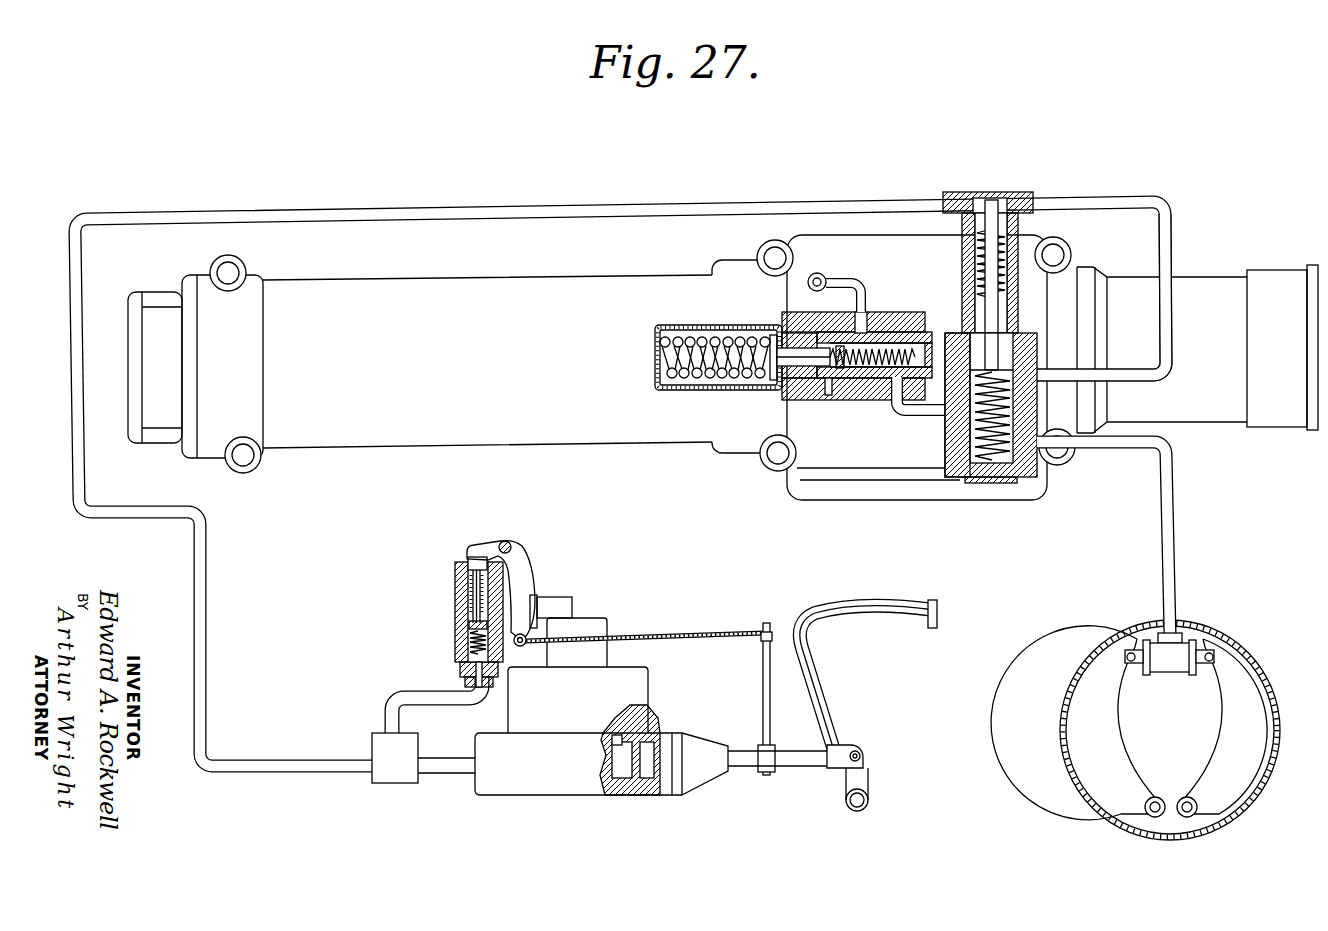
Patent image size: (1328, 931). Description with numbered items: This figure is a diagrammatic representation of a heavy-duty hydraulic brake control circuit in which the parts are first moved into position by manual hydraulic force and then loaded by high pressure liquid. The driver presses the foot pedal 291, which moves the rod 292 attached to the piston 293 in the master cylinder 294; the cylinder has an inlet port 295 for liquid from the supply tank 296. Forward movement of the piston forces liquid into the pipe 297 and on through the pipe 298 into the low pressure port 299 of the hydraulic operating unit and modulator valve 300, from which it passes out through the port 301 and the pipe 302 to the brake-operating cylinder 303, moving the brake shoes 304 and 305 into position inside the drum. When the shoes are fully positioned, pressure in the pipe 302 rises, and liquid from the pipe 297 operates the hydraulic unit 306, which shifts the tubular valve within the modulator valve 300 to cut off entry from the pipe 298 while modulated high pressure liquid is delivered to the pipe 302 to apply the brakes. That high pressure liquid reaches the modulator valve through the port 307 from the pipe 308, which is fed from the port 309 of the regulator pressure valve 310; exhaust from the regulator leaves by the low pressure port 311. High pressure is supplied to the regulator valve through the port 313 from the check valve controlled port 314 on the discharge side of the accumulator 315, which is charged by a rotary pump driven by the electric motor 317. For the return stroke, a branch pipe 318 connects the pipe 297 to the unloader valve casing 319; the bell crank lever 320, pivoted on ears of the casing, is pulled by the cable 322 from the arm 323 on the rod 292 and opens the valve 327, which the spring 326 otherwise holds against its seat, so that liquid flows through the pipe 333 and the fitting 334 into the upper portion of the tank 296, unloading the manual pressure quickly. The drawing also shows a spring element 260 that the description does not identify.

The spring 260 is at (690, 394).
The foot pedal 291 is at (881, 615).
The rod 292 is at (797, 769).
The piston 293 is at (643, 796).
The master cylinder 294 is at (543, 780).
The inlet port 295 is at (618, 733).
The supply tank 296 is at (634, 686).
The pipe 297 is at (500, 212).
The pipe 298 is at (1173, 238).
The low pressure port 299 is at (1028, 372).
The hydraulic operating unit and modulator valve 300 is at (947, 451).
The port 301 is at (1038, 474).
The pipe 302 is at (1170, 498).
The brake-operating cylinder 303 is at (1172, 660).
The brake shoe 304 is at (1092, 706).
The brake shoe 305 is at (1237, 680).
The hydraulic unit 306 is at (962, 258).
The port 307 is at (957, 408).
The pipe 308 is at (913, 416).
The port 309 is at (856, 400).
The regulator pressure valve 310 is at (850, 412).
The low pressure port 311 is at (828, 400).
The port 313 is at (862, 316).
The check valve controlled port 314 is at (840, 283).
The accumulator 315 is at (463, 427).
The electric motor 317 is at (1280, 400).
The branch pipe 318 is at (410, 697).
The unloader valve casing 319 is at (455, 593).
The bell crank lever 320 is at (522, 568).
The cable 322 is at (672, 636).
The arm 323 is at (763, 675).
The spring 326 is at (462, 651).
The valve 327 is at (468, 626).
The pipe 333 is at (535, 596).
The fitting 334 is at (566, 612).